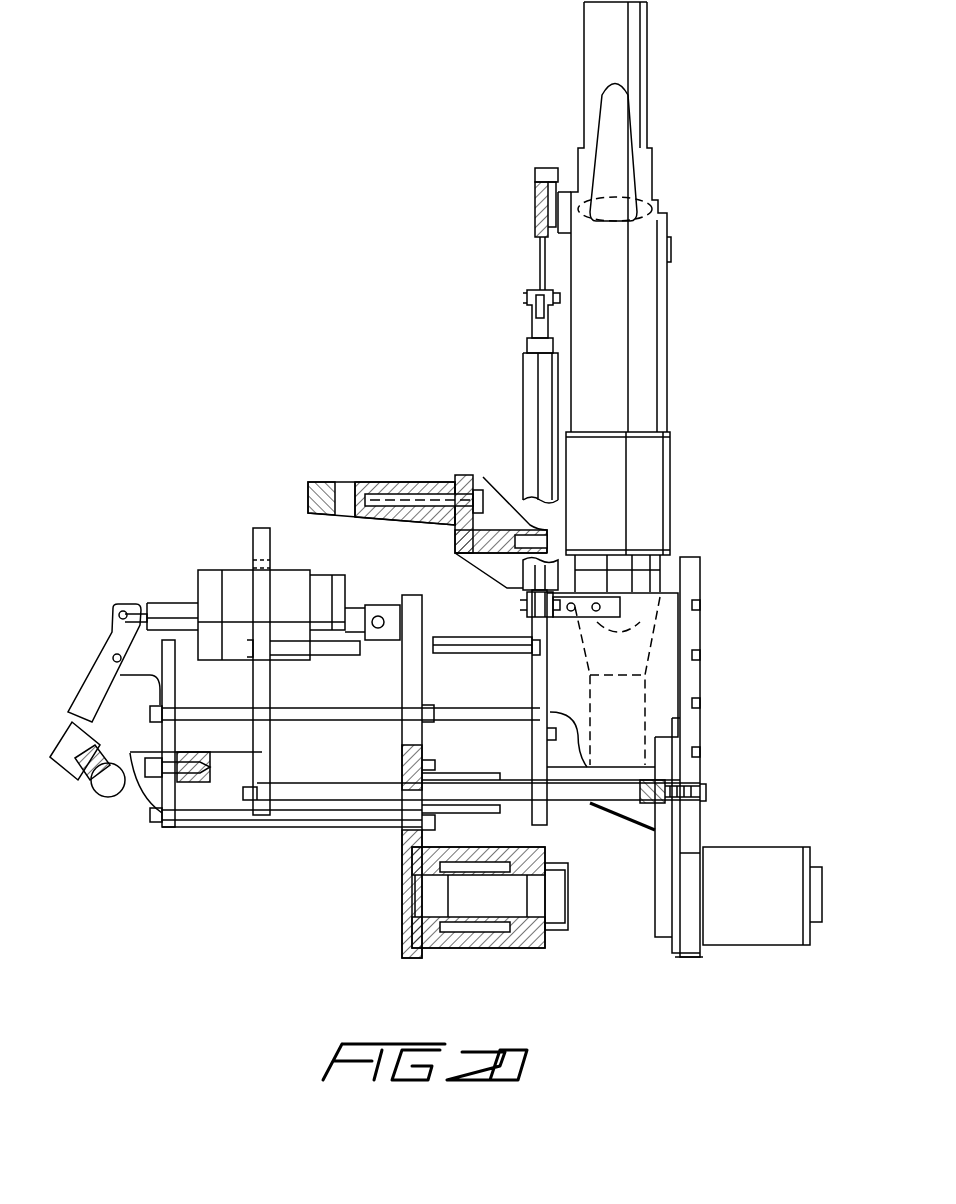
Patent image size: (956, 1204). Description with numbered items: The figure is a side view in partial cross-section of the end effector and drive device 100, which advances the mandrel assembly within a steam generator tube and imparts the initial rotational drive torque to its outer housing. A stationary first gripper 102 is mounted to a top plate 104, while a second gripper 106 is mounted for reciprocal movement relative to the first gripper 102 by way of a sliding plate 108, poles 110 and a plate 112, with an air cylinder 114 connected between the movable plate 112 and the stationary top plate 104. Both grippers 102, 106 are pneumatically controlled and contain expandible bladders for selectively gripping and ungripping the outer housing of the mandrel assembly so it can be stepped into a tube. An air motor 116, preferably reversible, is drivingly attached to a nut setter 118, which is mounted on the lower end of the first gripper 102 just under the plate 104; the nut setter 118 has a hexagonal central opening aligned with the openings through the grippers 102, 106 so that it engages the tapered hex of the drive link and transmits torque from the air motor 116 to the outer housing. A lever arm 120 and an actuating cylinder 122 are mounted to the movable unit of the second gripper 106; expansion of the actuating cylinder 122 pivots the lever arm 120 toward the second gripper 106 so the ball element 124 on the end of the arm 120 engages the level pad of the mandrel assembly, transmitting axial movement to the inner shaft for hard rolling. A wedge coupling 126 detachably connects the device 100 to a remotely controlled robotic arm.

The end effector and drive device 100 is at (275, 485).
The first gripper 102 is at (724, 922).
The top plate 104 is at (700, 632).
The second gripper 106 is at (425, 897).
The sliding plate 108 is at (407, 676).
The poles 110 is at (233, 712).
The plate 112 is at (175, 695).
The air cylinder 114 is at (344, 762).
The air motor 116 is at (635, 340).
The nut setter 118 is at (663, 911).
The lever arm 120 is at (92, 707).
The actuating cylinder 122 is at (234, 578).
The ball element 124 is at (113, 788).
The wedge coupling 126 is at (368, 483).